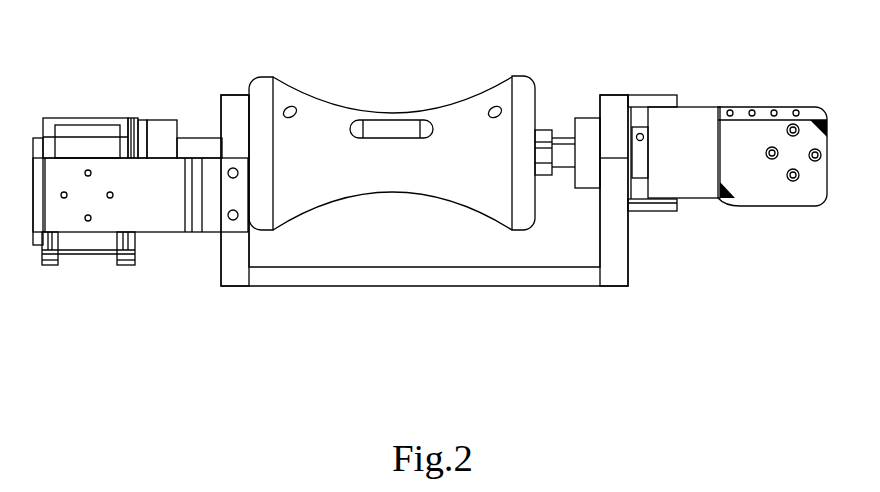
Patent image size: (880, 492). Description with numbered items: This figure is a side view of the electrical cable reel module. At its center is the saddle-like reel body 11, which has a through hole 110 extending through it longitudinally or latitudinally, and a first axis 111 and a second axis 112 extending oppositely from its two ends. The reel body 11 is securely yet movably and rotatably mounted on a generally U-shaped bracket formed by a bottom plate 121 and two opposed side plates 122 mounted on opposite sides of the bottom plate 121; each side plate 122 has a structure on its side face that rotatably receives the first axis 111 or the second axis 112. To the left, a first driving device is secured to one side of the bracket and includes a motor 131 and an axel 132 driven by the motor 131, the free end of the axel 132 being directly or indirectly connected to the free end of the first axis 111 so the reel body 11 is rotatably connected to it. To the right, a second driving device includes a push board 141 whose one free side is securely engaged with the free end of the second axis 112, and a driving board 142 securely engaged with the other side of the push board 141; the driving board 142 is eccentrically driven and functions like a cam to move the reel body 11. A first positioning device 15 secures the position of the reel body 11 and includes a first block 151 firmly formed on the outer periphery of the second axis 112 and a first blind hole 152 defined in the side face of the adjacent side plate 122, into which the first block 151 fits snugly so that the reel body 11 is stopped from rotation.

The reel body 11 is at (392, 130).
The through hole 110 is at (393, 132).
The first axis 111 is at (203, 140).
The second axis 112 is at (563, 140).
The bottom plate 121 is at (455, 277).
The side plates 122 is at (233, 243).
The motor 131 is at (98, 118).
The axel 132 is at (158, 130).
The push board 141 is at (638, 132).
The driving board 142 is at (771, 193).
The first positioning device 15 is at (581, 188).
The first block 151 is at (545, 128).
The first blind hole 152 is at (583, 178).